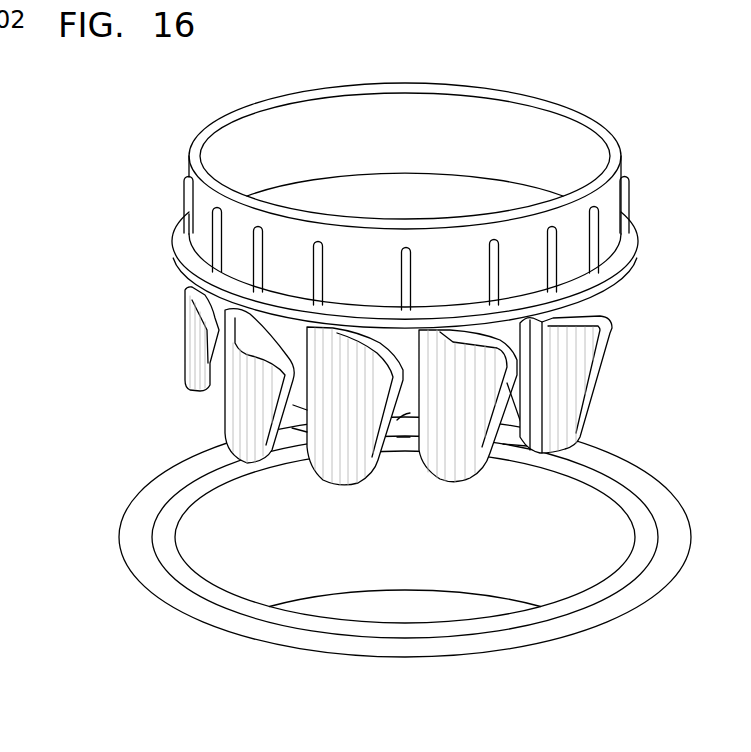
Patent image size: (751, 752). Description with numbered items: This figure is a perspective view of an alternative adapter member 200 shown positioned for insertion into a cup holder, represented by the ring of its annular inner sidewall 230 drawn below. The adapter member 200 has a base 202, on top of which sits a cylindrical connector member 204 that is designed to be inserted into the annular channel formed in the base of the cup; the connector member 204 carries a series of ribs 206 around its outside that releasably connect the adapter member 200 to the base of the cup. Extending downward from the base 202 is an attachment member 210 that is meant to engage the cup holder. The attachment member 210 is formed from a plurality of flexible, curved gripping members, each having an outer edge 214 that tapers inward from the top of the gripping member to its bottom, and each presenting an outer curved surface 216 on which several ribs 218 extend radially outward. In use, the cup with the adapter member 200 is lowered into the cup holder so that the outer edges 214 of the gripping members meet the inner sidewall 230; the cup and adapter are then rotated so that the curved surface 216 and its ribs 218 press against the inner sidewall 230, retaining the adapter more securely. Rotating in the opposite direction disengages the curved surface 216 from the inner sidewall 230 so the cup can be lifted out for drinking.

The adapter member 200 is at (163, 191).
The base 202 is at (634, 270).
The connector member 204 is at (620, 143).
The ribs 206 is at (598, 242).
The attachment member 210 is at (161, 333).
The outer edge 214 is at (281, 435).
The curved surface 216 is at (558, 372).
The ribs 218 is at (577, 418).
The inner sidewall 230 is at (257, 598).